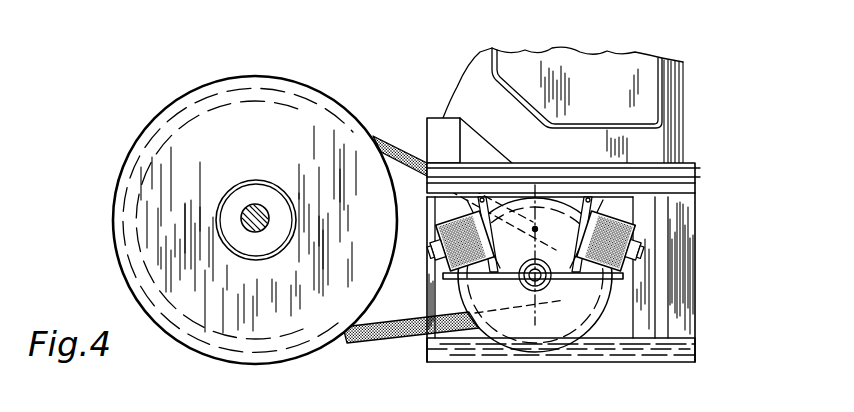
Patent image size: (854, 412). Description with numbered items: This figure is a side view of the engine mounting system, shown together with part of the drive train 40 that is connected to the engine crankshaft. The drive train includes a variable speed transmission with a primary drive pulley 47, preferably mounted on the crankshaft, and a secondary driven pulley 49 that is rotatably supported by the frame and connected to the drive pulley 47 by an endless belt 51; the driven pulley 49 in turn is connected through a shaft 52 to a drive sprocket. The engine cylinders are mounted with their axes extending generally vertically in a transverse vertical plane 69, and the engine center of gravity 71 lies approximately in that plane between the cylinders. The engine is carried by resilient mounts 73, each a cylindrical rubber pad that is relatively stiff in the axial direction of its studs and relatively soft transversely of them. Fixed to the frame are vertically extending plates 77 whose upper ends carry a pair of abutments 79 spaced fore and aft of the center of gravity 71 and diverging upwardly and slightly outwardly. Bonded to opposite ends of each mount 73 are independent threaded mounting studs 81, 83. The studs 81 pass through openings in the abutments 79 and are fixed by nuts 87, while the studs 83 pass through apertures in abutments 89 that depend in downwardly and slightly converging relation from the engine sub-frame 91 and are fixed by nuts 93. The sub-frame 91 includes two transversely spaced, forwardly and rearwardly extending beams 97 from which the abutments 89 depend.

The drive train 40 is at (373, 109).
The primary drive pulley 47 is at (571, 325).
The secondary driven pulley 49 is at (146, 140).
The endless belt 51 is at (391, 152).
The shaft 52 is at (257, 206).
The vertical plane 69 is at (563, 105).
The center of gravity 71 is at (524, 244).
The resilient mount 73 is at (446, 219).
The plate 77 is at (466, 351).
The abutment 79 is at (433, 236).
The threaded mounting stud 81 is at (422, 285).
The threaded mounting stud 83 is at (471, 200).
The nut 87 is at (428, 247).
The apertured abutment 89 is at (499, 193).
The engine sub-frame 91 is at (637, 185).
The nut 93 is at (536, 214).
The beam 97 is at (697, 174).